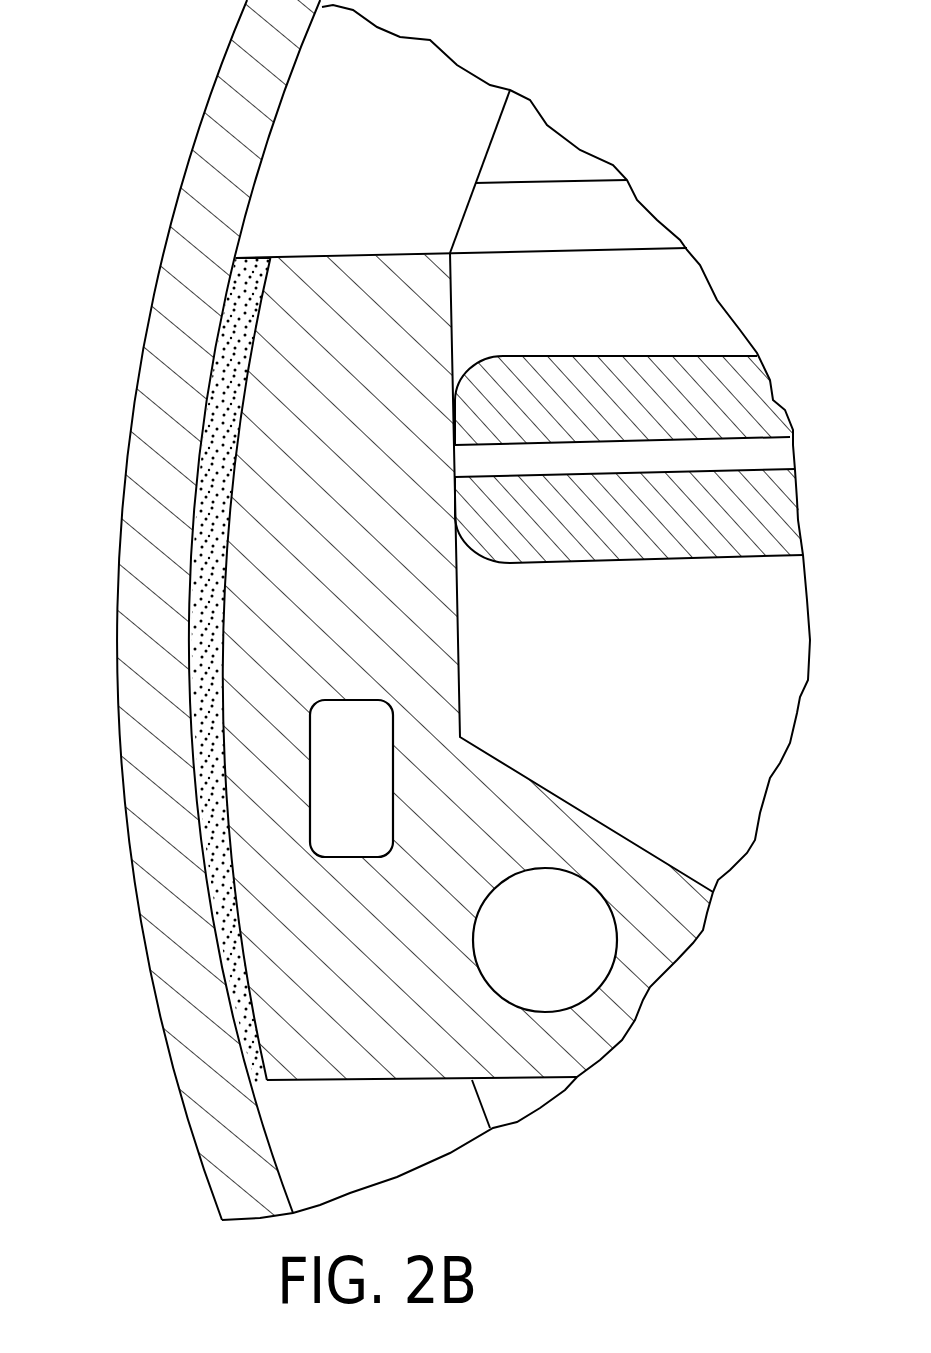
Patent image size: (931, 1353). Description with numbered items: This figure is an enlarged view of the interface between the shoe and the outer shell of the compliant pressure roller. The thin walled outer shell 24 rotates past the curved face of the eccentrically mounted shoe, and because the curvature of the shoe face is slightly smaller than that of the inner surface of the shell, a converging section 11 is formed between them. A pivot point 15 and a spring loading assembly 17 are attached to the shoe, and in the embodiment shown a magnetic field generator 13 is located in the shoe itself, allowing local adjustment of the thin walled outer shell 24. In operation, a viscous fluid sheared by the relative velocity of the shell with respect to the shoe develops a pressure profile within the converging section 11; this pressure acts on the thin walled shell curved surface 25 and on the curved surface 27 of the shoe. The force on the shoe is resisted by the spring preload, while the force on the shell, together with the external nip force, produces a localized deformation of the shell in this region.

The converging section 11 is at (252, 257).
The magnetic field generator 13 is at (368, 743).
The pivot point 15 is at (566, 956).
The spring loading assembly 17 is at (668, 365).
The thin walled outer shell 24 is at (155, 320).
The thin walled shell curved surface 25 is at (195, 502).
The curved surface of the shoe 27 is at (228, 580).